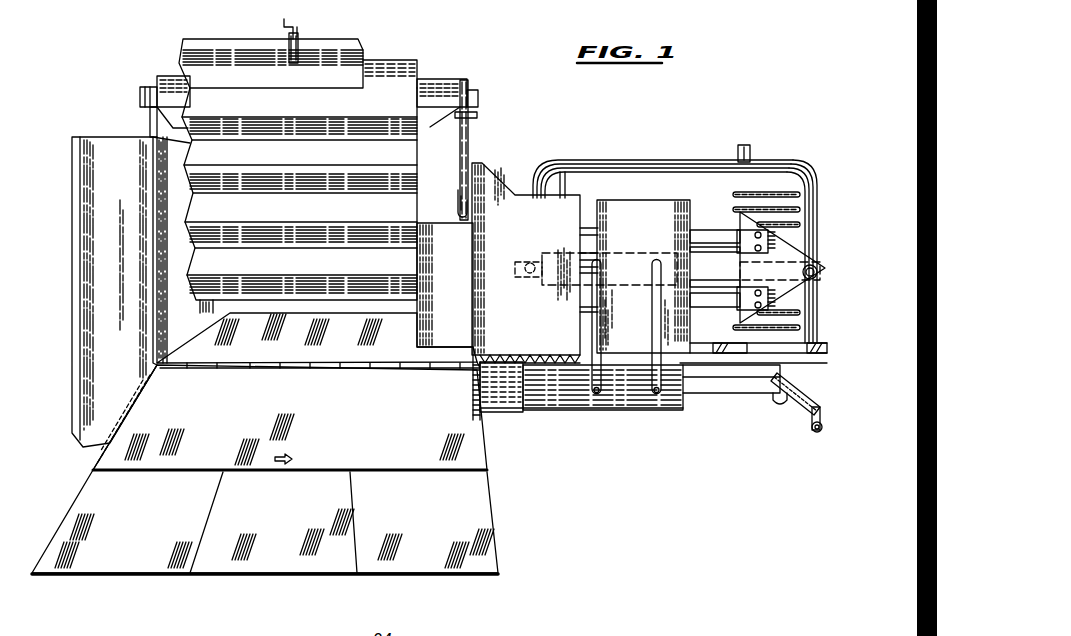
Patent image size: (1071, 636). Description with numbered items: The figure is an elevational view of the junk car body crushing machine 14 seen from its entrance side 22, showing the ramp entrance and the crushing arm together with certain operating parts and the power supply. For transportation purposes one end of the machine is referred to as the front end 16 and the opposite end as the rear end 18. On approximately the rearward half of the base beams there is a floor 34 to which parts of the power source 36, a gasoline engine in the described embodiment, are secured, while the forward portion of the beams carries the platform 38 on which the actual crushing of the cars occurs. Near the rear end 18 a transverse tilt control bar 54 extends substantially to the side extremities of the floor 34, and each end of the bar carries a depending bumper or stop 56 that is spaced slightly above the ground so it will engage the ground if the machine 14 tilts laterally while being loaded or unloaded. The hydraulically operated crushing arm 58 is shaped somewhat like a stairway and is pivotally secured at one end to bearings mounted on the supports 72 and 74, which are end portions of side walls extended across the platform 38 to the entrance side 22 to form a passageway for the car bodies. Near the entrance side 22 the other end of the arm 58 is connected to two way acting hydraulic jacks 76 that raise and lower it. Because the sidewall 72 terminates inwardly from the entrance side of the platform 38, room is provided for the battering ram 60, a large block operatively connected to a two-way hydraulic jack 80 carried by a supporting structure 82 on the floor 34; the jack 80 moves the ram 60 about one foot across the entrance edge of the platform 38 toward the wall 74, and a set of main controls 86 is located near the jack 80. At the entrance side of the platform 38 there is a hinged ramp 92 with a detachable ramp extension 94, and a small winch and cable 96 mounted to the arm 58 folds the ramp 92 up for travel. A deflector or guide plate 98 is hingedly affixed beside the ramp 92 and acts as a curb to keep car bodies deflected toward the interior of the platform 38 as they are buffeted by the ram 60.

The machine 14 is at (588, 147).
The front end 16 is at (60, 176).
The rear end 18 is at (803, 157).
The entrance side 22 is at (385, 350).
The floor 34 is at (760, 357).
The power source 36 is at (668, 158).
The platform 38 is at (237, 351).
The tilt control bar 54 is at (797, 410).
The bumper or stop 56 is at (813, 428).
The crushing arm 58 is at (403, 62).
The battering ram 60 is at (529, 318).
The support 72 is at (454, 292).
The support 74 is at (197, 317).
The two way acting hydraulic jacks 76 is at (455, 193).
The two-way hydraulic jack 80 is at (585, 253).
The supporting structure 82 is at (702, 213).
The set of main controls 86 is at (608, 392).
The hinged ramp 92 is at (110, 452).
The detachable ramp extension 94 is at (82, 495).
The winch and cable 96 is at (300, 37).
The deflector or guide plate 98 is at (80, 213).